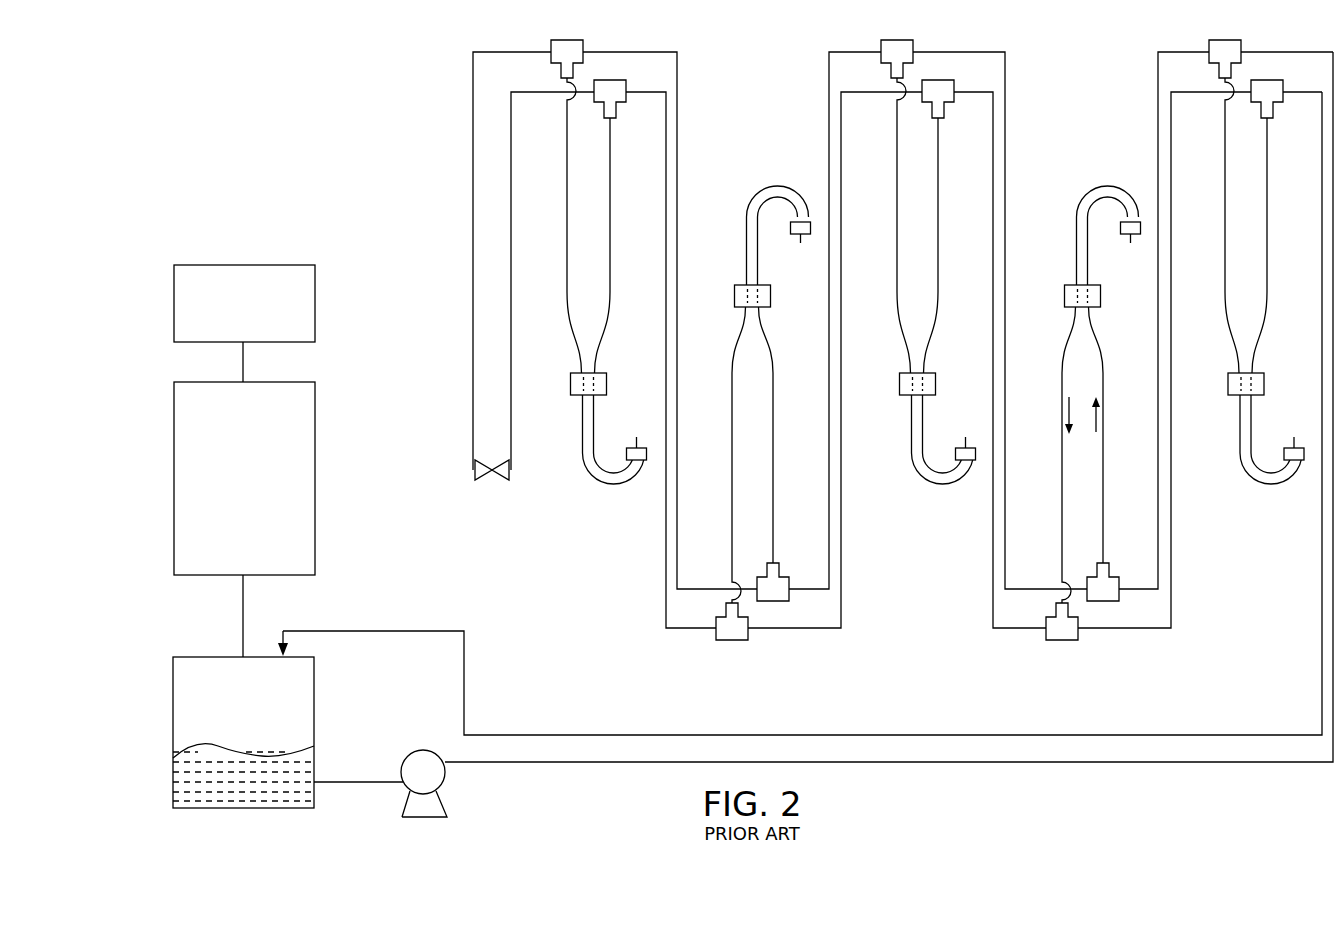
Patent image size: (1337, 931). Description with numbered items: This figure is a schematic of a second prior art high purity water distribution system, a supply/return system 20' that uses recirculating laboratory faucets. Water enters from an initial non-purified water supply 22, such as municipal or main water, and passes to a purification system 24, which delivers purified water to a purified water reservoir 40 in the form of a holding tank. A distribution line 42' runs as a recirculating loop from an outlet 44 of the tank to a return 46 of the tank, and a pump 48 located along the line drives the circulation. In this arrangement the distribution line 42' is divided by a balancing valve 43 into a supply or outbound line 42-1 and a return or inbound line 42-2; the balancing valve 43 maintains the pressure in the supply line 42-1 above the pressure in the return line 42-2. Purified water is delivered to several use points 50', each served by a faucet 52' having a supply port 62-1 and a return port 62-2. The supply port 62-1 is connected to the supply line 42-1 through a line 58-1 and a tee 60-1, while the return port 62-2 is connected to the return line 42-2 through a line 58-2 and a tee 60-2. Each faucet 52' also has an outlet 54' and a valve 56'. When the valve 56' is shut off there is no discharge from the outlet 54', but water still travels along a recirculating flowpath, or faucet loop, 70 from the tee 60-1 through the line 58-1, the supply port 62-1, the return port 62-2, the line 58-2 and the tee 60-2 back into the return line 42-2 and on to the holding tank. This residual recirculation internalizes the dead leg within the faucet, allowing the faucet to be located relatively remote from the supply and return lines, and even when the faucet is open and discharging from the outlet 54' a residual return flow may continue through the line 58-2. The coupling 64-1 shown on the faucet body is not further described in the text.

The supply/return system 20' is at (281, 207).
The non-purified water supply 22 is at (232, 316).
The purification system 24 is at (232, 489).
The purified water reservoir 40 is at (232, 712).
The distribution line 42' is at (808, 434).
The supply line 42-1 is at (1010, 765).
The return line 42-2 is at (748, 733).
The balancing valve 43 is at (484, 497).
The outlet 44 is at (315, 770).
The return 46 is at (290, 634).
The pump 48 is at (413, 781).
The use point 50' is at (935, 351).
The faucet 52' is at (1085, 222).
The outlet 54' is at (1168, 235).
The valve 56' is at (1138, 204).
The line 58-1 is at (1104, 450).
The line 58-2 is at (1063, 499).
The tee 60-1 is at (1120, 570).
The tee 60-2 is at (1092, 636).
The supply port 62-1 is at (1092, 309).
The return port 62-2 is at (1071, 309).
The coupling 64-1 is at (1098, 293).
The recirculating flowpath 70 is at (1099, 423).